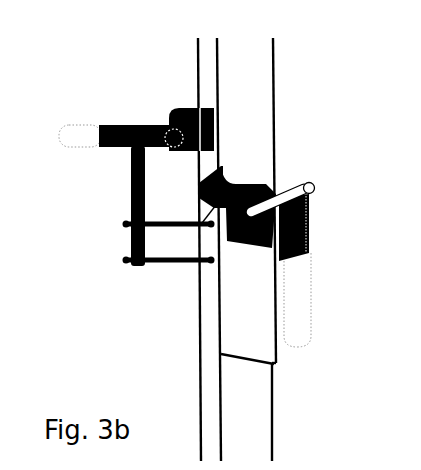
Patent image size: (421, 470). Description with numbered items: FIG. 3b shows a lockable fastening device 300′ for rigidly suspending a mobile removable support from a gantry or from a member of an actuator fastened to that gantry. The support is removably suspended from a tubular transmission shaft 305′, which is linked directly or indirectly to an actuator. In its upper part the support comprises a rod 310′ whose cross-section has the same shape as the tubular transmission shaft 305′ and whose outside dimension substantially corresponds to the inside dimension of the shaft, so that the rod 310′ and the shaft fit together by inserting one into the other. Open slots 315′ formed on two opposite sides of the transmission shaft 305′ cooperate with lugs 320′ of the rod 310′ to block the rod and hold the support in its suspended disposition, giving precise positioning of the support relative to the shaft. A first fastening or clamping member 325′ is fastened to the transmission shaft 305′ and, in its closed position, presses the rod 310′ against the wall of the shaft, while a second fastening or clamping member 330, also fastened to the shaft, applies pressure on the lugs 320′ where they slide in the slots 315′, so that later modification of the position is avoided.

The lockable fastening device 300′ is at (175, 249).
The tubular transmission shaft 305′ is at (268, 133).
The rod 310′ is at (262, 421).
The slots 315′ is at (203, 206).
The lugs 320′ is at (232, 298).
The first fastening or clamping member 325′ is at (125, 203).
The second fastening or clamping member 330 is at (272, 187).